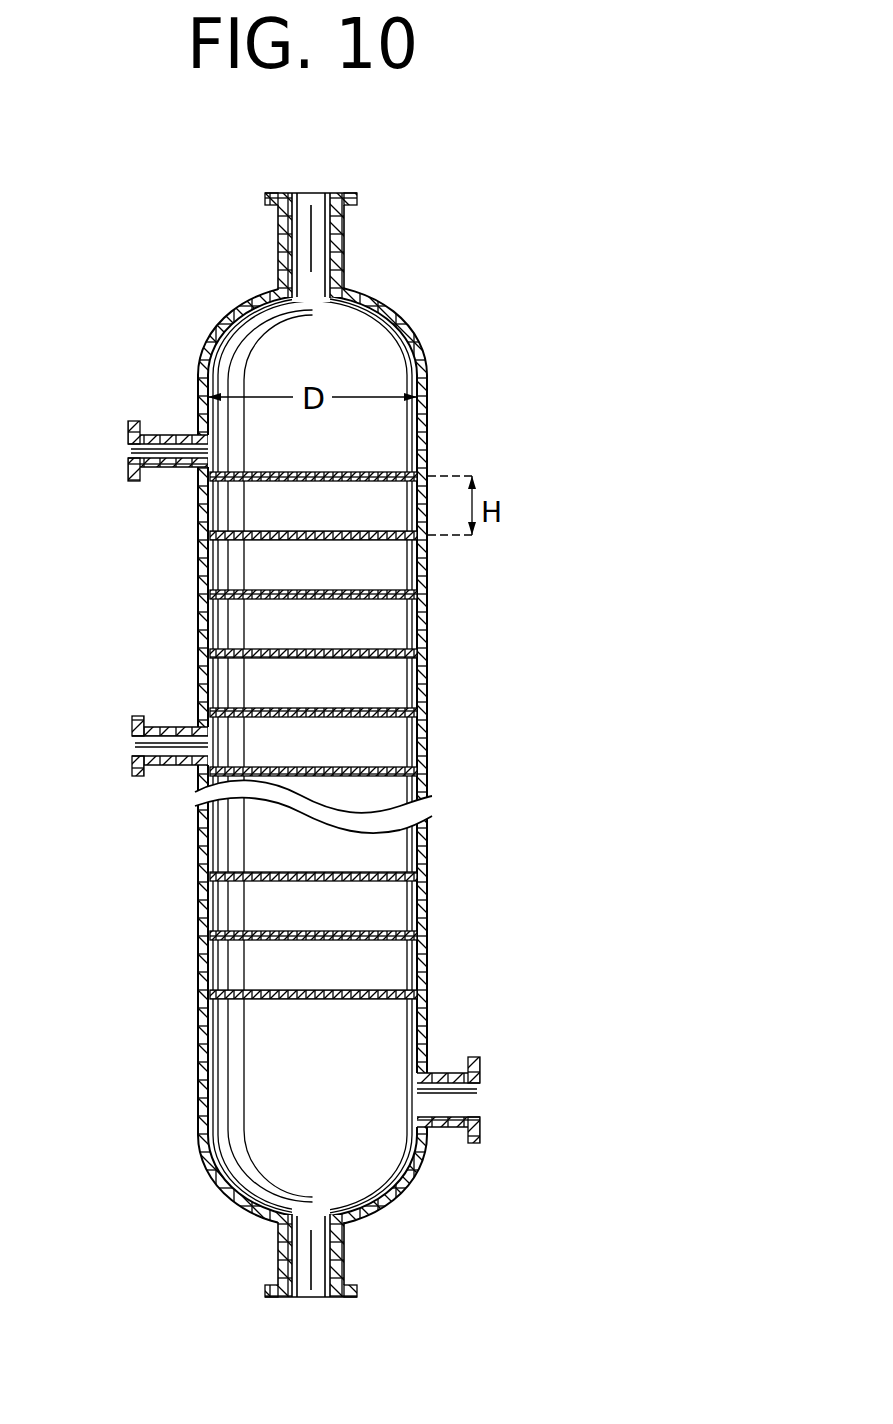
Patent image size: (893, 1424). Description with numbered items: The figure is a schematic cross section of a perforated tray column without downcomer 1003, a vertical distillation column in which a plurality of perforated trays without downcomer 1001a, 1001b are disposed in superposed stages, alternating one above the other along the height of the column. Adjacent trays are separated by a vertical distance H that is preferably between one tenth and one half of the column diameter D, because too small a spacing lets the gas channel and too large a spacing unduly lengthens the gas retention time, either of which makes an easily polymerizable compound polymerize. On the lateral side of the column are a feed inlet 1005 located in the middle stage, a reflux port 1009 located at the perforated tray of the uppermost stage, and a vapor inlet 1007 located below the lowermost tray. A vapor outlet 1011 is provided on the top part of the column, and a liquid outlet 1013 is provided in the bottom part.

The perforated tray column without downcomer 1003 is at (447, 320).
The vapor outlet 1011 is at (312, 193).
The reflux port 1009 is at (128, 452).
The perforated tray without downcomer 1001a is at (215, 478).
The perforated tray without downcomer 1001b is at (215, 537).
The feed inlet 1005 is at (132, 745).
The vapor inlet 1007 is at (477, 1103).
The liquid outlet 1013 is at (318, 1297).